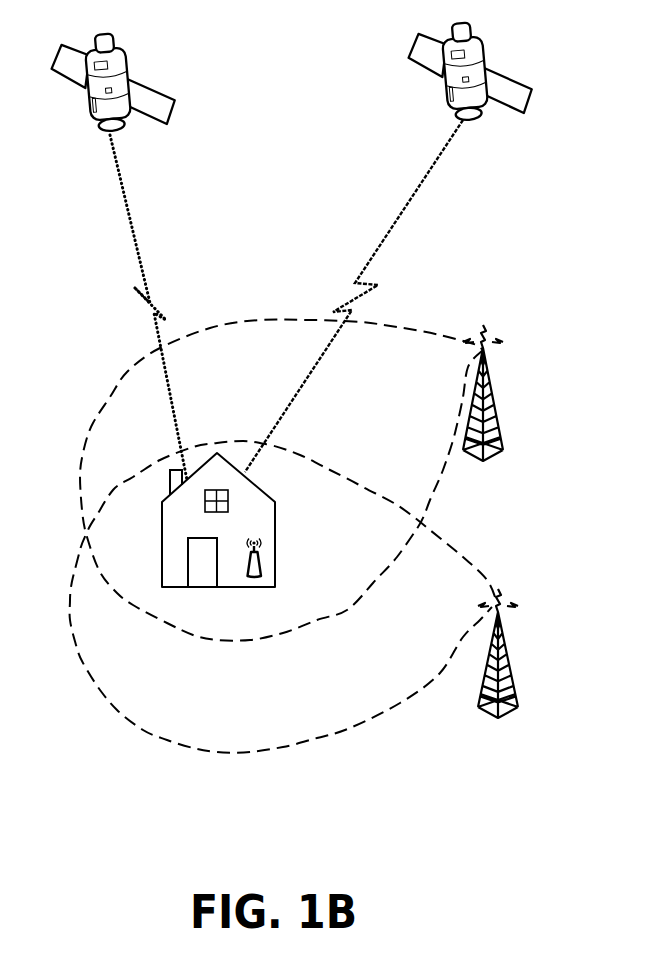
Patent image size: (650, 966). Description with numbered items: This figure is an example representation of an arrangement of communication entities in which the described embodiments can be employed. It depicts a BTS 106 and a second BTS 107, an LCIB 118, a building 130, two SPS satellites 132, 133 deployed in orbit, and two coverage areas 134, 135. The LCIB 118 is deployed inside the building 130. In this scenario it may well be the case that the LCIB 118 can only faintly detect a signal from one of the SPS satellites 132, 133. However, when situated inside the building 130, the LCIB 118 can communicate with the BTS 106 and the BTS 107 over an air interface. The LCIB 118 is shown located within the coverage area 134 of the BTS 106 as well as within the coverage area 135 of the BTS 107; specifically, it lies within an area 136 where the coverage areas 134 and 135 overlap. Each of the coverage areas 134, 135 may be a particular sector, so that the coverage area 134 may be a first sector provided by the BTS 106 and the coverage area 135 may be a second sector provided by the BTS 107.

The BTS 106 is at (489, 406).
The BTS 107 is at (506, 660).
The LCIB 118 is at (261, 566).
The building 130 is at (162, 520).
The SPS satellite 132 is at (100, 133).
The SPS satellite 133 is at (455, 120).
The coverage area 134 is at (226, 328).
The coverage area 135 is at (262, 750).
The area 136 is at (343, 546).